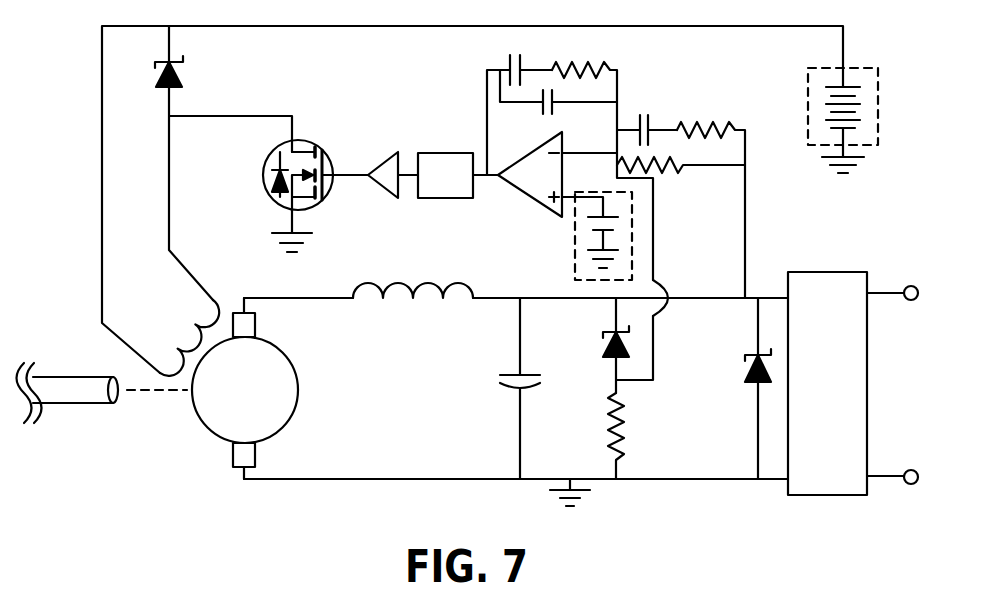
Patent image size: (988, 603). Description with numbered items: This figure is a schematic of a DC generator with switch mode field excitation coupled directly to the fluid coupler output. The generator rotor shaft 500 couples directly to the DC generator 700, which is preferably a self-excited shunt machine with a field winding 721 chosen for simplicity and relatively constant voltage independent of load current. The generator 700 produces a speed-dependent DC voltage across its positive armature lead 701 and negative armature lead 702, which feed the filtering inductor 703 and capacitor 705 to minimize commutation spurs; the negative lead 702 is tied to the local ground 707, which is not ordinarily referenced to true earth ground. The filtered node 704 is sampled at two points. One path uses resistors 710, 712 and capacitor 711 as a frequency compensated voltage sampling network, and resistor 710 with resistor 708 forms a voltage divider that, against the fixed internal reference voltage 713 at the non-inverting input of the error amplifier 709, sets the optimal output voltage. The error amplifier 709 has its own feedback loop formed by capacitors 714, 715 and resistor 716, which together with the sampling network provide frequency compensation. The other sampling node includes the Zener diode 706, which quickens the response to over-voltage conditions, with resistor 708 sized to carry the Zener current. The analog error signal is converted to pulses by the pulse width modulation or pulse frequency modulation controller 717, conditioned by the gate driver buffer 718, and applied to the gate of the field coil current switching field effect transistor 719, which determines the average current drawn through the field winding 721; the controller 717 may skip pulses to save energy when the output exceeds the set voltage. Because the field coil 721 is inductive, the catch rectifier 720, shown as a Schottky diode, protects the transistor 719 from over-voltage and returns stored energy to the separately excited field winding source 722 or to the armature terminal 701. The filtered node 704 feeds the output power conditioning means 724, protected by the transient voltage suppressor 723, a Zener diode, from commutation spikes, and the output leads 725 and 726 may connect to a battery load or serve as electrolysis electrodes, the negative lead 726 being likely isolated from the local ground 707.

The generator rotor shaft 500 is at (62, 375).
The DC generator 700 is at (200, 430).
The positive armature lead 701 is at (285, 305).
The negative armature lead 702 is at (315, 476).
The inductor 703 is at (401, 287).
The filtered node 704 is at (506, 298).
The capacitor 705 is at (499, 378).
The Zener diode 706 is at (598, 332).
The local ground 707 is at (585, 494).
The resistor 708 is at (608, 415).
The error amplifier 709 is at (530, 174).
The resistor 710 is at (684, 170).
The capacitor 711 is at (655, 112).
The resistor 712 is at (706, 123).
The reference voltage 713 is at (574, 232).
The capacitor 714 is at (556, 106).
The capacitor 715 is at (513, 69).
The resistor 716 is at (579, 70).
The pulse width modulation or pulse frequency modulation controller 717 is at (445, 175).
The gate driver buffer 718 is at (402, 150).
The field coil current switching field effect transistor 719 is at (320, 156).
The catch rectifier 720 is at (191, 60).
The field winding 721 is at (221, 307).
The separately excited field winding source 722 is at (806, 70).
The transient voltage suppressor 723 is at (747, 378).
The output power conditioning means 724 is at (827, 383).
The lead 725 is at (910, 302).
The negative differential voltage lead 726 is at (908, 470).